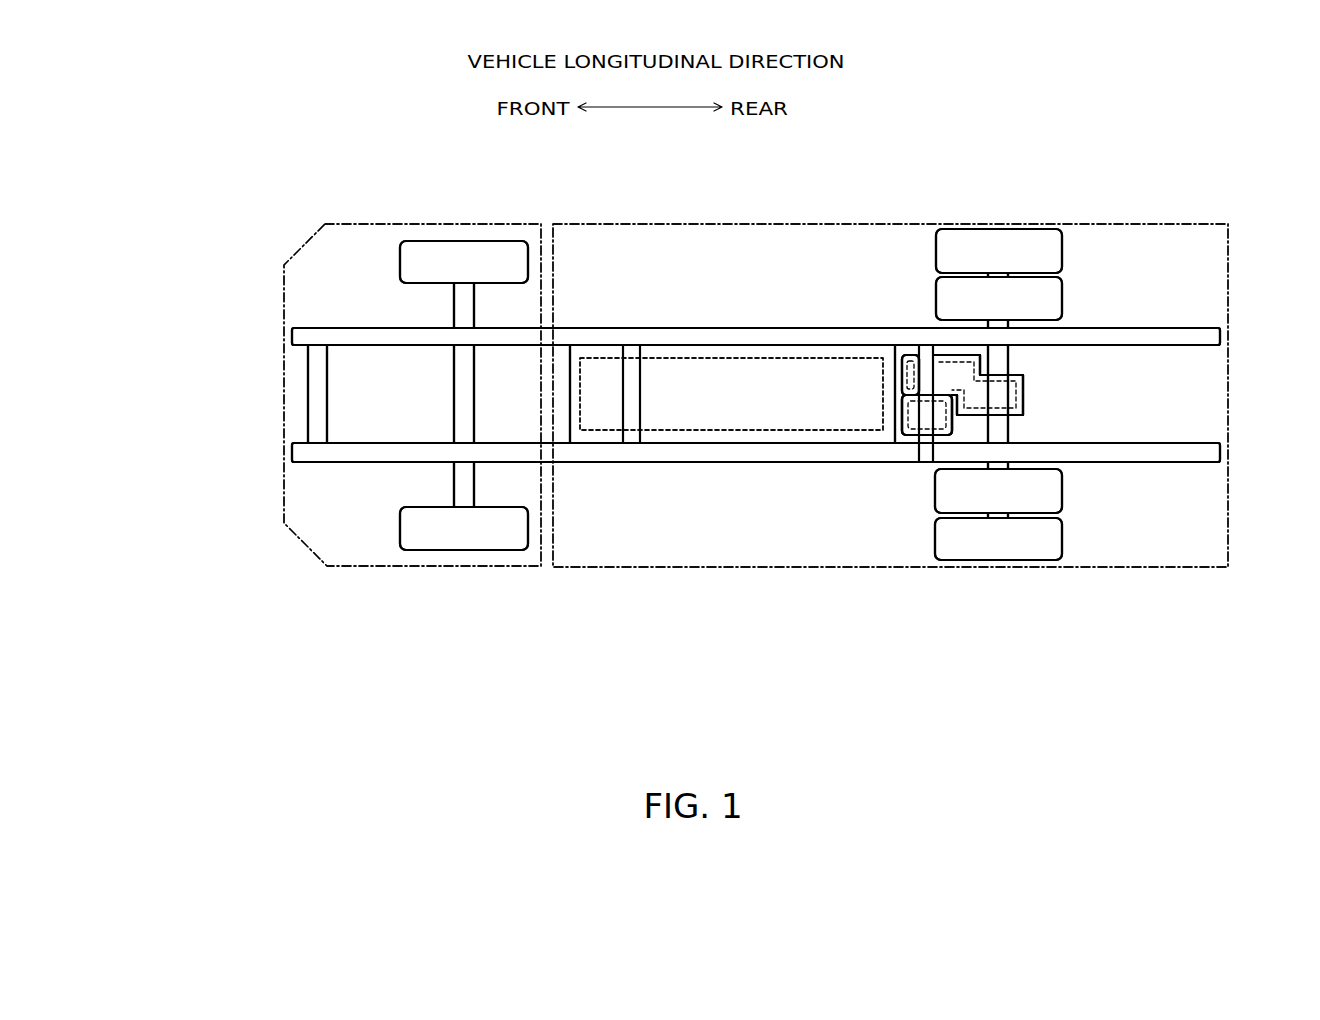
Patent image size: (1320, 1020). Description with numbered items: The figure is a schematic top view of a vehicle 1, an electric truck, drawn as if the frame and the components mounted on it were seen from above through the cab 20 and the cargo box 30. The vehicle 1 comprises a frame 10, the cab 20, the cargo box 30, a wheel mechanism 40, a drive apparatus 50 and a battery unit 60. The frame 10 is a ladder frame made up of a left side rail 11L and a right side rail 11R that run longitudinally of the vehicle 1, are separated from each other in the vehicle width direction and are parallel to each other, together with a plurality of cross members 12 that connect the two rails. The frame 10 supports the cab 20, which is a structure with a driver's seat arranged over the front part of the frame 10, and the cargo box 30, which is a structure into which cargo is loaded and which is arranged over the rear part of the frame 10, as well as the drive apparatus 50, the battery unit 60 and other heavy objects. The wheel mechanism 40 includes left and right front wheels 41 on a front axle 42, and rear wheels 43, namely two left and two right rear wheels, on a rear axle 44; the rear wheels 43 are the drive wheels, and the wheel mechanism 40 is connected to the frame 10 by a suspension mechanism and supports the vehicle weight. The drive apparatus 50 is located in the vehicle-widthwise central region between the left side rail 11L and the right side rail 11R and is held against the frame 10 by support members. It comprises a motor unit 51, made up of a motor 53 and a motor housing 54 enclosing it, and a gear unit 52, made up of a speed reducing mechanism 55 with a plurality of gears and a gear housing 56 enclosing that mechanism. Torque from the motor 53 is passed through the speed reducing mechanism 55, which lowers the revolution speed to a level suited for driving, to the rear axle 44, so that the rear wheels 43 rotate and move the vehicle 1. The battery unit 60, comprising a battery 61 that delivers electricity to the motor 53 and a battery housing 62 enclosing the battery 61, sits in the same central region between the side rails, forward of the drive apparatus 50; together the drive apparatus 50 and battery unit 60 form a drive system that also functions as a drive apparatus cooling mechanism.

The vehicle 1 is at (359, 151).
The frame 10 is at (214, 335).
The right side rail 11R is at (293, 336).
The left side rail 11L is at (293, 455).
The cross member 12 is at (309, 405).
The cab 20 is at (360, 567).
The cargo box 30 is at (578, 567).
The wheel mechanism 40 is at (403, 618).
The front wheel 41 is at (427, 255).
The front axle 42 is at (465, 495).
The rear wheel 43 is at (958, 292).
The rear axle 44 is at (998, 470).
The drive apparatus 50 is at (792, 130).
The motor unit 51 is at (778, 165).
The gear unit 52 is at (932, 165).
The motor 53 is at (893, 418).
The motor housing 54 is at (895, 403).
The speed reducing mechanism 55 is at (907, 360).
The gear housing 56 is at (947, 362).
The battery unit 60 is at (695, 165).
The battery 61 is at (656, 376).
The battery housing 62 is at (721, 356).